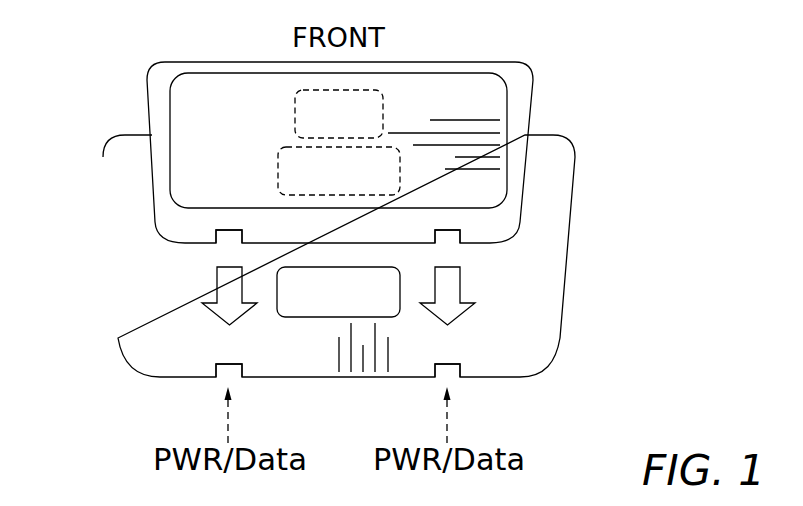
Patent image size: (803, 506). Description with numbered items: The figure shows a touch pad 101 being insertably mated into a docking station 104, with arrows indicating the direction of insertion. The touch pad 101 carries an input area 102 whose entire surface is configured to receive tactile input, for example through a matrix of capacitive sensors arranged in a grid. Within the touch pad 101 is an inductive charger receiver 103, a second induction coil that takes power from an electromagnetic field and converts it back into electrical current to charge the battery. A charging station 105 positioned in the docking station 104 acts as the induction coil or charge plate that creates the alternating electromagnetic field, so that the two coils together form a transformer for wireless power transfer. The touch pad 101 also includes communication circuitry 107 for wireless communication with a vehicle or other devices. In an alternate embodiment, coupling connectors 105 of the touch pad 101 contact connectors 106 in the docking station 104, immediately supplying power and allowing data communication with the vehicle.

The touch pad 101 is at (540, 107).
The input area 102 is at (166, 116).
The inductive charger receiver 103 is at (353, 183).
The docking station 104 is at (577, 193).
The charging station 105 is at (355, 302).
The connectors 106 is at (215, 368).
The communication circuitry 107 is at (353, 126).